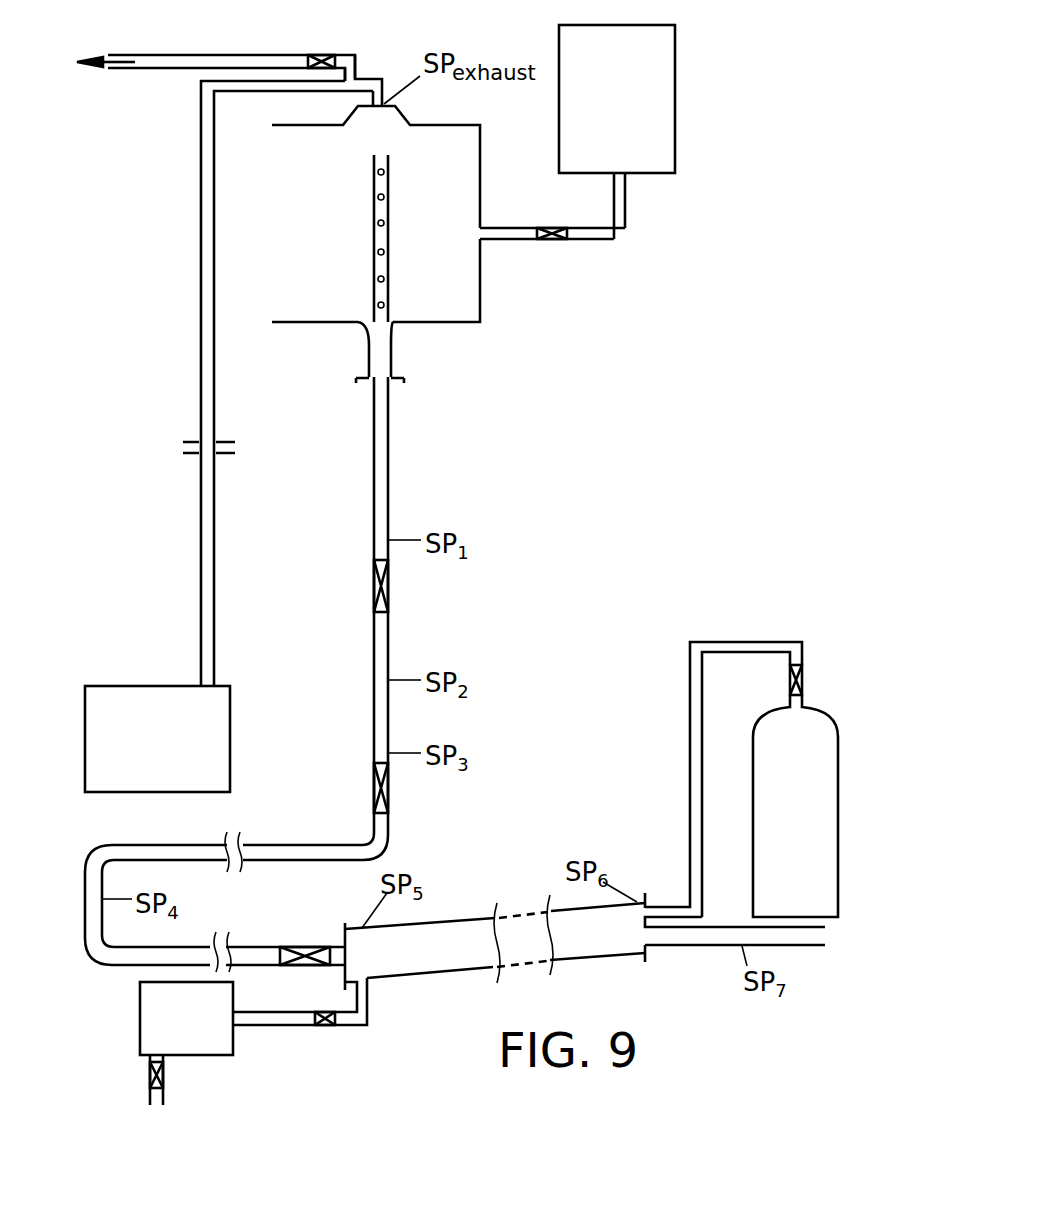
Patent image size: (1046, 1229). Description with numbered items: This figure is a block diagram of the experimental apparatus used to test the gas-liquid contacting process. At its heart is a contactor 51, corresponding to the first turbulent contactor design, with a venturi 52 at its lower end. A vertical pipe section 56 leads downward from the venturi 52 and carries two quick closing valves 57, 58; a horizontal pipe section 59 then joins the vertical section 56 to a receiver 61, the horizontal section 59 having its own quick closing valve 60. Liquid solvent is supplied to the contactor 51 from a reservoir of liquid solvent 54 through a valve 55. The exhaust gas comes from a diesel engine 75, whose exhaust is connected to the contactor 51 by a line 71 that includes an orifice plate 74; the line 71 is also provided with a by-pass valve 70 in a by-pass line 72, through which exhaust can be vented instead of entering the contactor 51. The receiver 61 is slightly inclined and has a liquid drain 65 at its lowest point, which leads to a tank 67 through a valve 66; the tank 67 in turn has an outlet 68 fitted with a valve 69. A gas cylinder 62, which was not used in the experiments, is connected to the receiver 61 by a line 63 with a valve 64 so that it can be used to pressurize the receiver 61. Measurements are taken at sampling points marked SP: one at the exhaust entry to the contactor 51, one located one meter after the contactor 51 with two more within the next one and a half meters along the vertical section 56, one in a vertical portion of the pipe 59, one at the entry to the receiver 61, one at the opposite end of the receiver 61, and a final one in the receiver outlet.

The contactor 51 is at (481, 303).
The venturi 52 is at (398, 349).
The reservoir of liquid solvent 54 is at (675, 93).
The valve 55 is at (553, 240).
The vertical pipe section 56 is at (389, 422).
The quick closing valve 57 is at (390, 588).
The quick closing valve 58 is at (390, 785).
The horizontal pipe section 59 is at (297, 843).
The quick closing valve 60 is at (298, 946).
The receiver 61 is at (452, 896).
The gas cylinder 62 is at (753, 837).
The line 63 is at (690, 831).
The valve 64 is at (803, 680).
The liquid drain 65 is at (368, 1006).
The valve 66 is at (325, 1027).
The tank 67 is at (140, 1013).
The outlet 68 is at (148, 1096).
The valve 69 is at (164, 1075).
The by-pass valve 70 is at (323, 56).
The line 71 is at (214, 145).
The by-pass line 72 is at (357, 63).
The orifice plate 74 is at (190, 434).
The diesel engine 75 is at (138, 685).